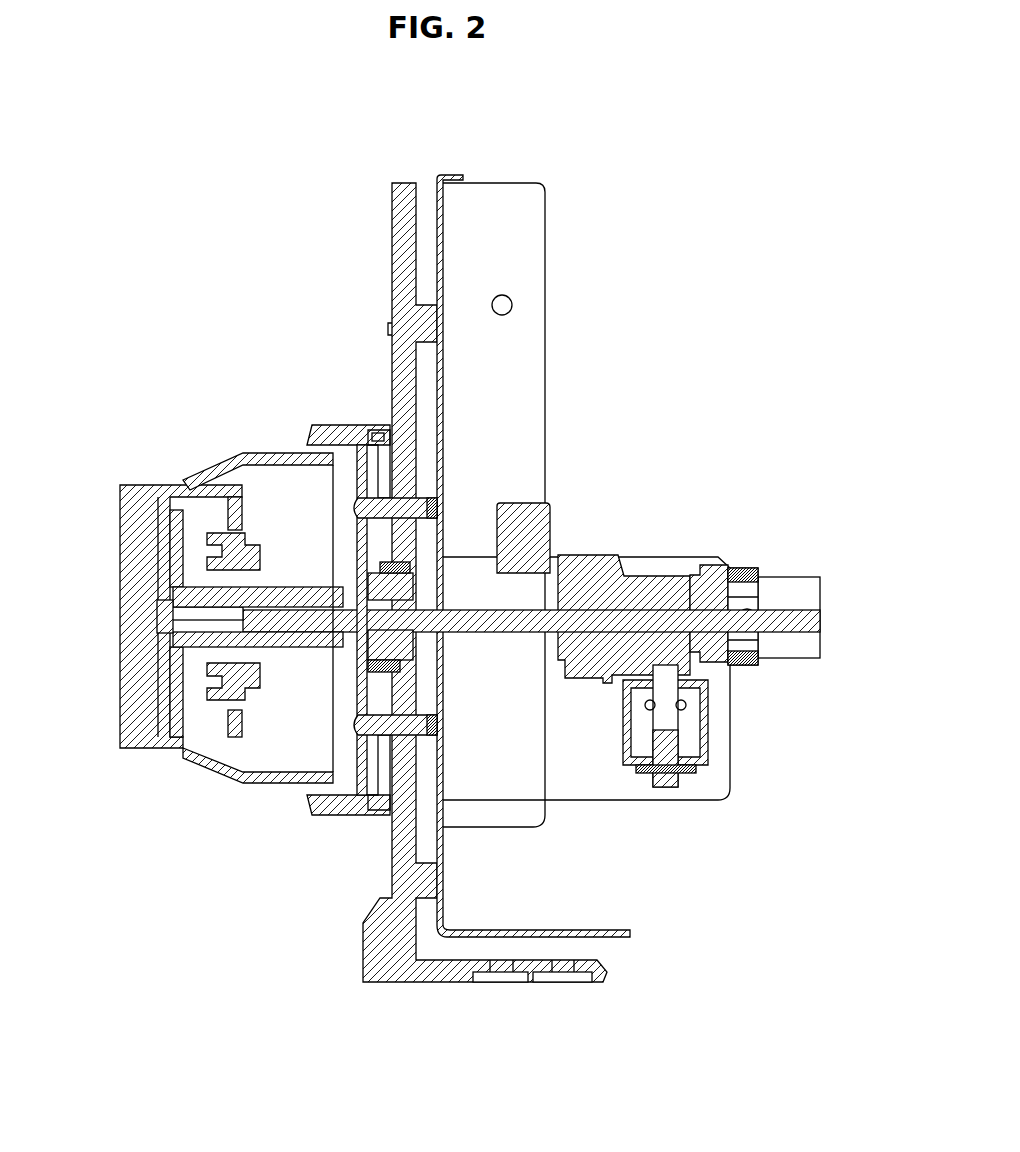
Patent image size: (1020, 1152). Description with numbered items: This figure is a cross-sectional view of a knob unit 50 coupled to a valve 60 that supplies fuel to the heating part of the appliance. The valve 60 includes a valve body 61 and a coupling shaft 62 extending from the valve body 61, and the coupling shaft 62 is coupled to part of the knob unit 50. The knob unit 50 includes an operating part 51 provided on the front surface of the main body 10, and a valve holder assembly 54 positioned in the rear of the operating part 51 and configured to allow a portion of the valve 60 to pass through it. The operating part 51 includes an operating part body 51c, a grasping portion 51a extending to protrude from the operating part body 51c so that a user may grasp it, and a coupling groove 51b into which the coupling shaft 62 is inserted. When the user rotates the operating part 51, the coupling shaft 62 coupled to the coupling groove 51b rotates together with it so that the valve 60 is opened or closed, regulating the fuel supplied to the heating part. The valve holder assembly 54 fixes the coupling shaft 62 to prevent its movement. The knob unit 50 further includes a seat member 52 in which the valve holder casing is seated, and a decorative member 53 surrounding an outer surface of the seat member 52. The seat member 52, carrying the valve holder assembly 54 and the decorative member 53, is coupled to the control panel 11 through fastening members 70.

The main body 10 is at (538, 380).
The control panel 11 is at (403, 183).
The knob unit 50 is at (230, 532).
The operating part 51 is at (195, 565).
The grasping portion 51a is at (125, 545).
The coupling groove 51b is at (185, 655).
The operating part body 51c is at (258, 453).
The seat member 52 is at (330, 425).
The decorative member 53 is at (378, 428).
The valve holder assembly 54 is at (360, 645).
The valve 60 is at (631, 628).
The valve body 61 is at (577, 655).
The coupling shaft 62 is at (463, 632).
The fastening members 70 is at (425, 497).